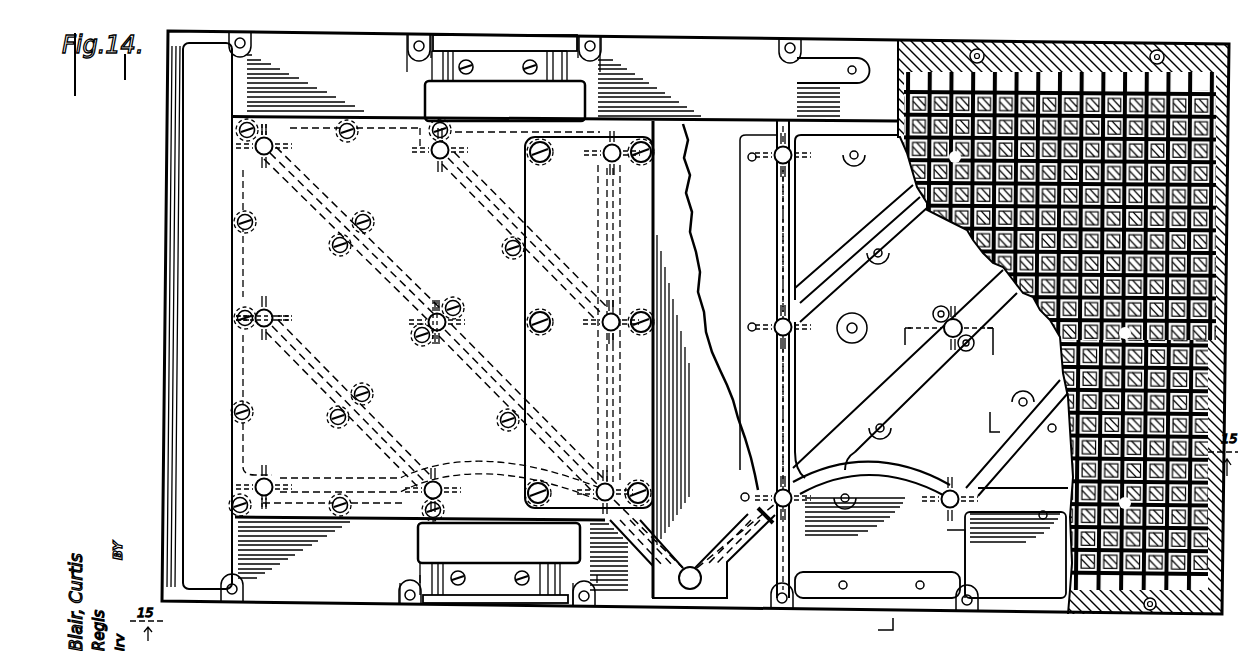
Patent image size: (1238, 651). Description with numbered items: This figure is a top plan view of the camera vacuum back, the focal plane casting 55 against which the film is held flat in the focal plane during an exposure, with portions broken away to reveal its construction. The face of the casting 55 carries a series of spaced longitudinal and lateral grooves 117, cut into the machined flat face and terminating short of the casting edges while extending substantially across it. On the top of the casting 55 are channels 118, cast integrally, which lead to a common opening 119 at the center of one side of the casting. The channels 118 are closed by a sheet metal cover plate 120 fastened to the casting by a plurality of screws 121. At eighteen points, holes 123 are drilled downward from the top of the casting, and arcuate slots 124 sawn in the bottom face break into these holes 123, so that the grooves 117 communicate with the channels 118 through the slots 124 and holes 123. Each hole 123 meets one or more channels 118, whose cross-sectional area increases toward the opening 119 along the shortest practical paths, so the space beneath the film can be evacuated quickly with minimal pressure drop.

The focal plane casting 55 is at (342, 615).
The grooves 117 is at (1027, 85).
The channels 118 is at (385, 258).
The common opening 119 is at (697, 589).
The cover plate 120 is at (373, 512).
The screws 121 is at (513, 256).
The holes 123 is at (272, 311).
The arcuate slots 124 is at (290, 317).